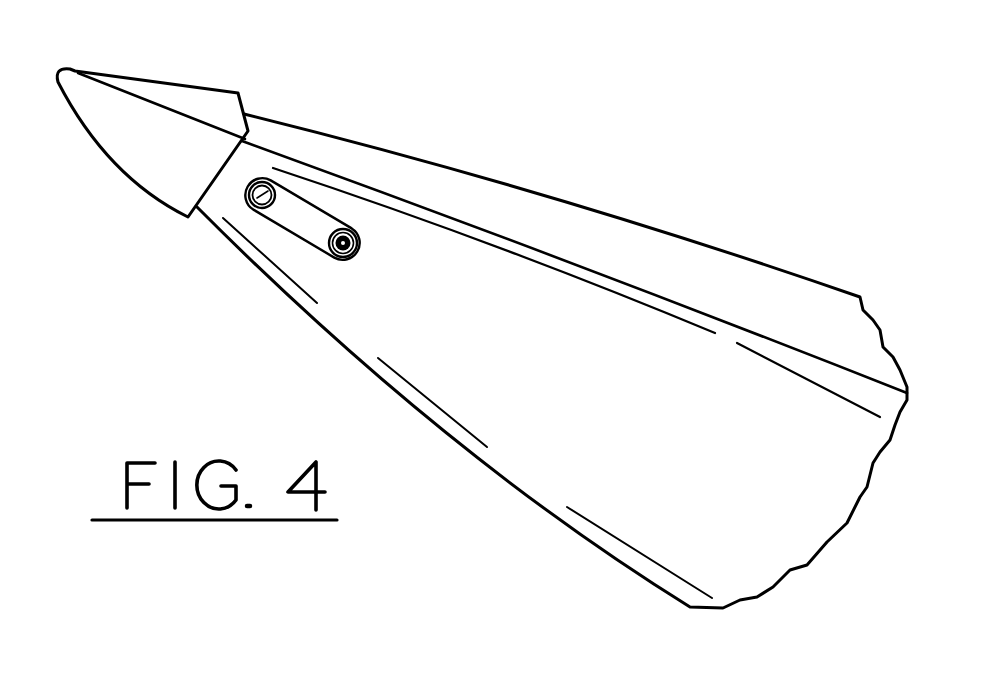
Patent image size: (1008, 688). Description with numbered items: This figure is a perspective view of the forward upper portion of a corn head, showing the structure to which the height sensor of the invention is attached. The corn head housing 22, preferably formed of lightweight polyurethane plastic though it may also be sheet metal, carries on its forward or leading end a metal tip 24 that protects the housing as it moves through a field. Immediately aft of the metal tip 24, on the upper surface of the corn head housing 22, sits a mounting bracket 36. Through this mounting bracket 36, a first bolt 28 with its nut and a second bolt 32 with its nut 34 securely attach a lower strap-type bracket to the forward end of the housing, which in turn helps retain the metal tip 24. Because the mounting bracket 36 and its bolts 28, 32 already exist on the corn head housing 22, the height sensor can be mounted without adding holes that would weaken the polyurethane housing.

The corn head housing 22 is at (575, 218).
The metal tip 24 is at (176, 103).
The first bolt 28 is at (268, 189).
The second bolt 32 is at (343, 250).
The nut 34 is at (352, 232).
The mounting bracket 36 is at (305, 223).